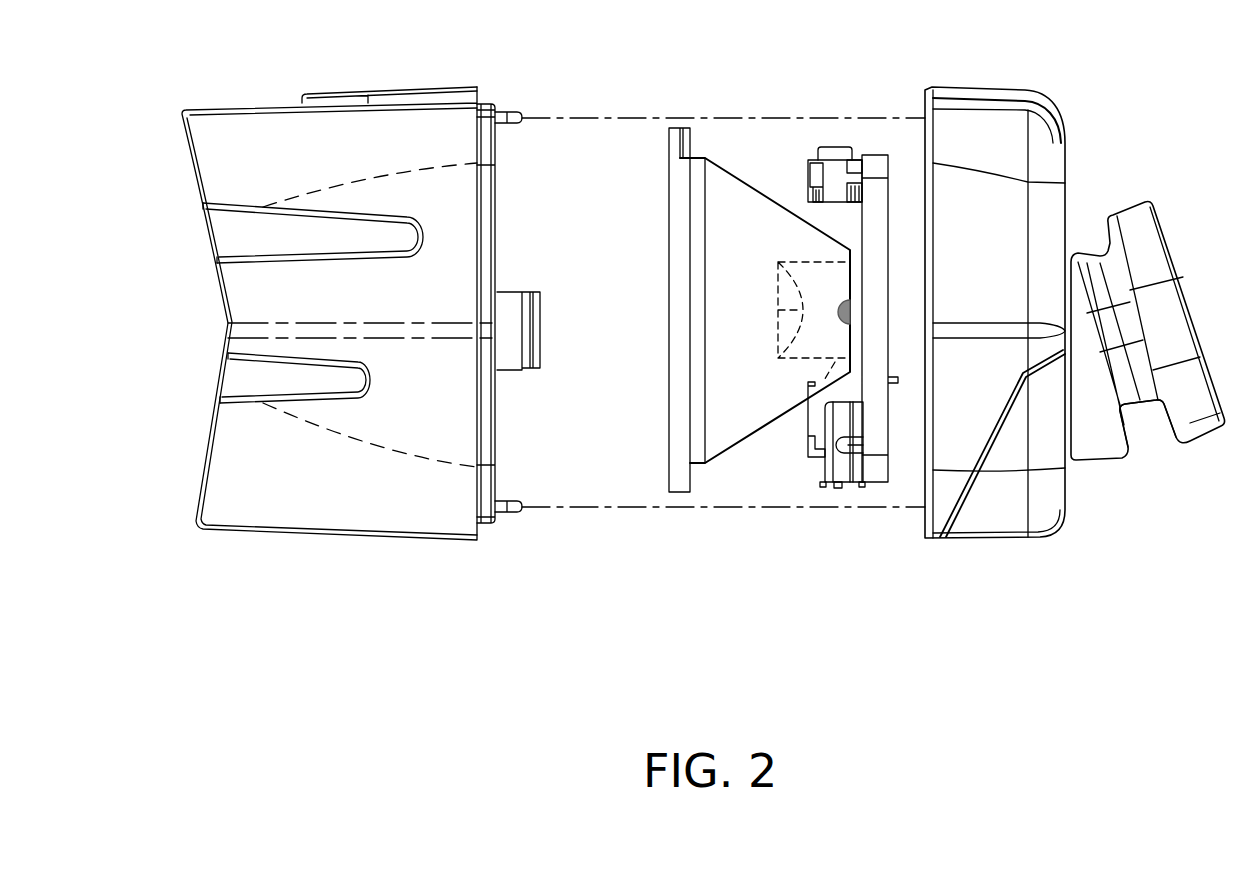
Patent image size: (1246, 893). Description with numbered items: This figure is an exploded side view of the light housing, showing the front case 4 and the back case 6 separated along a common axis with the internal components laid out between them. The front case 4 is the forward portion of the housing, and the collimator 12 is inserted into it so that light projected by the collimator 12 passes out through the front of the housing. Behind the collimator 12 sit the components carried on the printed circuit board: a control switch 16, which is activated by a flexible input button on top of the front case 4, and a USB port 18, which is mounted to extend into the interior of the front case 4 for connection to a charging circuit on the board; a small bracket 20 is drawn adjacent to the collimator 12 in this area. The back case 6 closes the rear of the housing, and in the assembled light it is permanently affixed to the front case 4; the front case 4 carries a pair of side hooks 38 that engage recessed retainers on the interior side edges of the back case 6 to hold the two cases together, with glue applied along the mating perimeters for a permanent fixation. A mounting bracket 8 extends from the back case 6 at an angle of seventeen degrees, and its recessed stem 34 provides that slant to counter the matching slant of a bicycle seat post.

The front case 4 is at (352, 313).
The back case 6 is at (1008, 84).
The mounting bracket 8 is at (1151, 188).
The collimator 12 is at (731, 166).
The control switch 16 is at (836, 138).
The USB port 18 is at (846, 500).
The bracket 20 is at (804, 418).
The recessed stem 34 is at (1159, 452).
The side hooks 38 is at (548, 335).